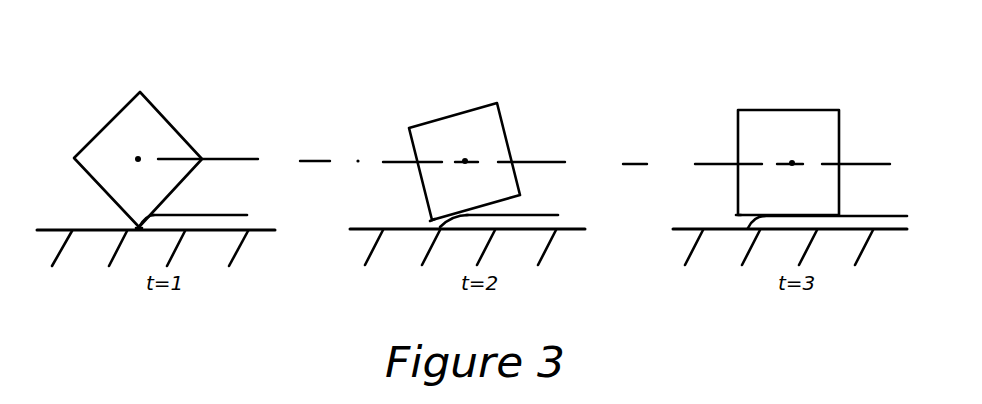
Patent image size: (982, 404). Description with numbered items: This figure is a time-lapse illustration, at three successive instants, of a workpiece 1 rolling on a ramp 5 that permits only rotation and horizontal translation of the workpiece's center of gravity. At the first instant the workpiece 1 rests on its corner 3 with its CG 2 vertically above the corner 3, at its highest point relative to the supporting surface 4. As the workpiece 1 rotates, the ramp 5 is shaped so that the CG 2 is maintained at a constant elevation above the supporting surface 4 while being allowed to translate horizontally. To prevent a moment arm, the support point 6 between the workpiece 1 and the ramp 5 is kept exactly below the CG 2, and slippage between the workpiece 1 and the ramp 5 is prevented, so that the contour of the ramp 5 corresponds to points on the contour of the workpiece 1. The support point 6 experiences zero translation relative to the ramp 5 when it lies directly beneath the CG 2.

The workpiece 1 is at (170, 118).
The CG 2 is at (138, 160).
The corner 3 is at (138, 227).
The supporting surface 4 is at (265, 227).
The ramp 5 is at (206, 216).
The support point 6 is at (139, 226).